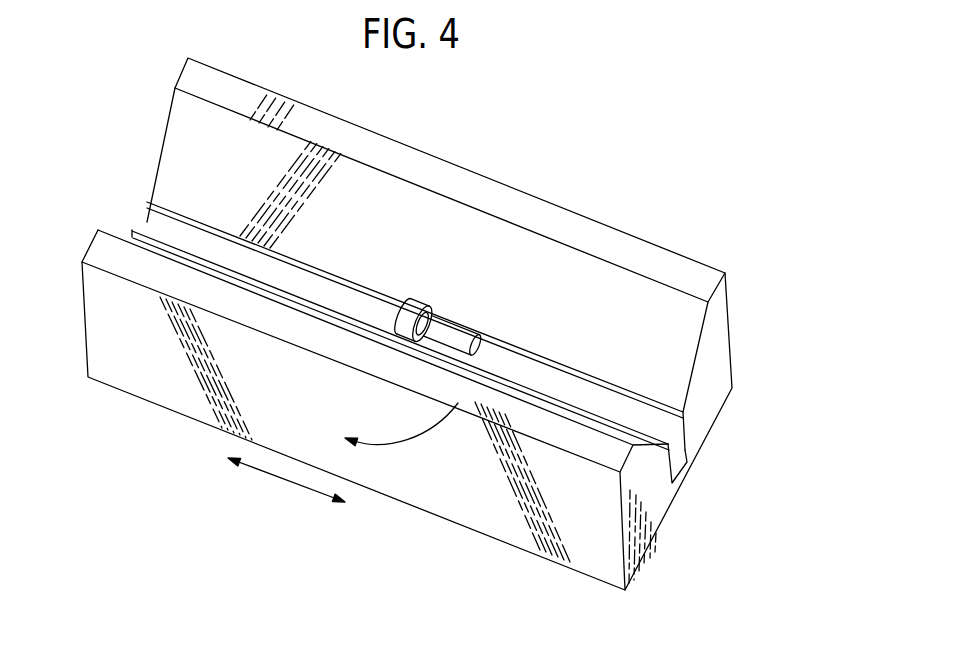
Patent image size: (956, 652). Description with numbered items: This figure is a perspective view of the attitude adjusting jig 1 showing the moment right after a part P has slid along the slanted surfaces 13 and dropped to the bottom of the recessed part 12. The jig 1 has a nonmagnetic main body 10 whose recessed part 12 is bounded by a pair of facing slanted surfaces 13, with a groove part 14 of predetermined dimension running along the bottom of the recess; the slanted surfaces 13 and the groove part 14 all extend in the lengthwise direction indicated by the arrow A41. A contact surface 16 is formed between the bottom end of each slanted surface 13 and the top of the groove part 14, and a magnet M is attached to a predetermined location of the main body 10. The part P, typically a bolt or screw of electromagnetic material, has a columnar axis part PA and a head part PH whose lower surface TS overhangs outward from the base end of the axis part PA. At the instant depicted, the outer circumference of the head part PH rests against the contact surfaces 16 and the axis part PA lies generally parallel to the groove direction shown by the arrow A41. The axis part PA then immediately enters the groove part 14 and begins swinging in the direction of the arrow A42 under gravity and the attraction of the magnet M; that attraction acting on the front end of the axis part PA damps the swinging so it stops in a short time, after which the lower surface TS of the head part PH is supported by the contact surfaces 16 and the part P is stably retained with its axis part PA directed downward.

The attitude adjusting jig 1 is at (66, 228).
The main body 10 is at (712, 362).
The recessed part 12 is at (528, 296).
The slanted surface 13 is at (127, 237).
The groove part 14 is at (558, 384).
The contact surface 16 is at (638, 433).
The magnet M is at (685, 458).
The part P is at (394, 289).
The head part PH is at (414, 312).
The lower surface TS is at (432, 308).
The axis part PA is at (466, 334).
The arrow A41 is at (282, 480).
The arrow A42 is at (413, 440).